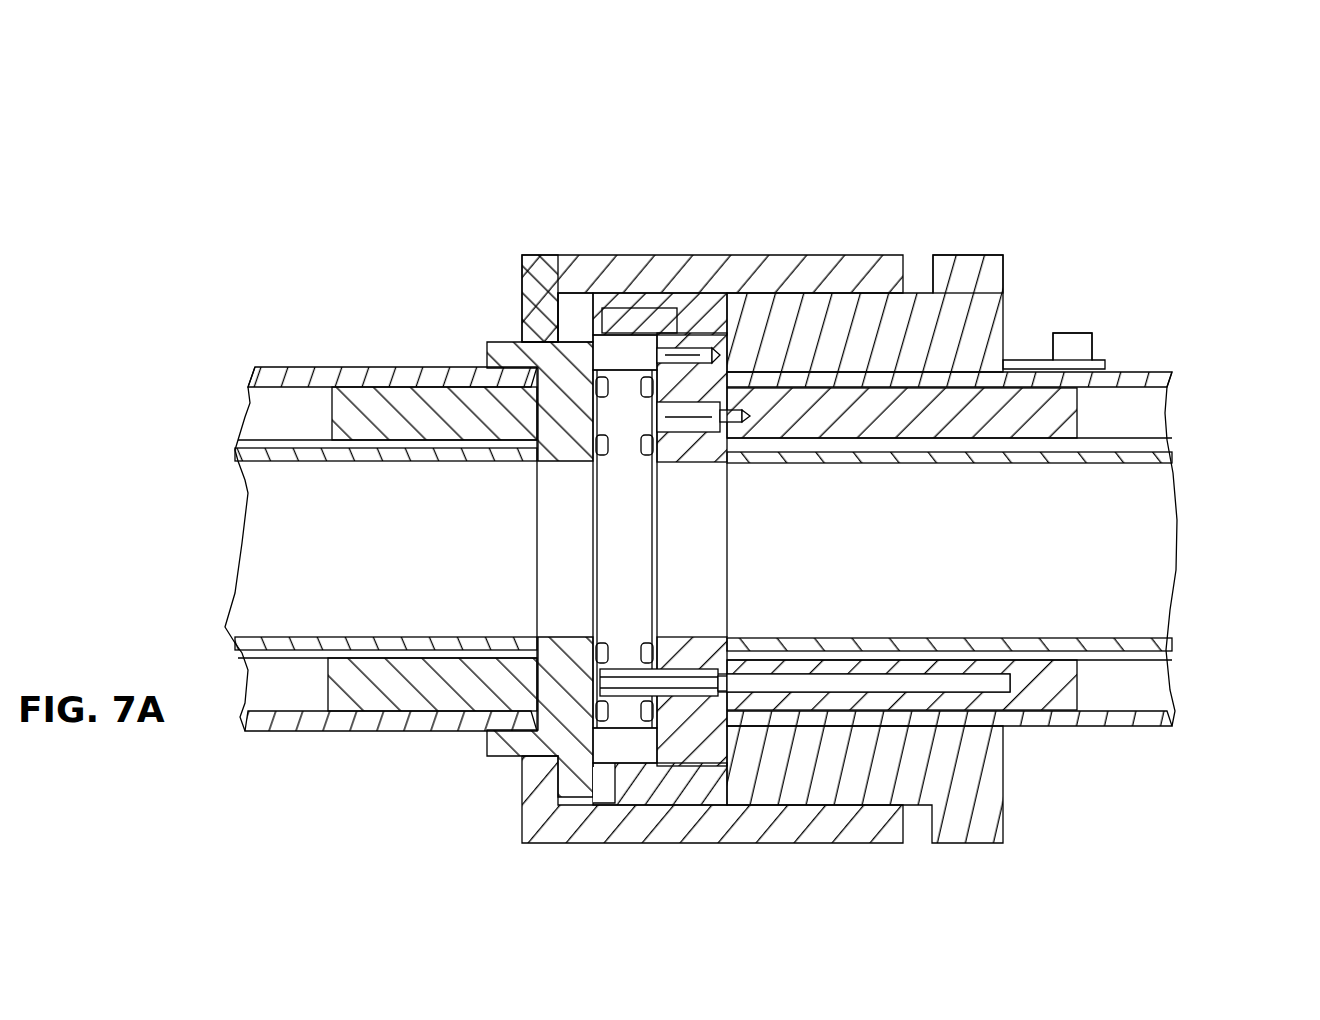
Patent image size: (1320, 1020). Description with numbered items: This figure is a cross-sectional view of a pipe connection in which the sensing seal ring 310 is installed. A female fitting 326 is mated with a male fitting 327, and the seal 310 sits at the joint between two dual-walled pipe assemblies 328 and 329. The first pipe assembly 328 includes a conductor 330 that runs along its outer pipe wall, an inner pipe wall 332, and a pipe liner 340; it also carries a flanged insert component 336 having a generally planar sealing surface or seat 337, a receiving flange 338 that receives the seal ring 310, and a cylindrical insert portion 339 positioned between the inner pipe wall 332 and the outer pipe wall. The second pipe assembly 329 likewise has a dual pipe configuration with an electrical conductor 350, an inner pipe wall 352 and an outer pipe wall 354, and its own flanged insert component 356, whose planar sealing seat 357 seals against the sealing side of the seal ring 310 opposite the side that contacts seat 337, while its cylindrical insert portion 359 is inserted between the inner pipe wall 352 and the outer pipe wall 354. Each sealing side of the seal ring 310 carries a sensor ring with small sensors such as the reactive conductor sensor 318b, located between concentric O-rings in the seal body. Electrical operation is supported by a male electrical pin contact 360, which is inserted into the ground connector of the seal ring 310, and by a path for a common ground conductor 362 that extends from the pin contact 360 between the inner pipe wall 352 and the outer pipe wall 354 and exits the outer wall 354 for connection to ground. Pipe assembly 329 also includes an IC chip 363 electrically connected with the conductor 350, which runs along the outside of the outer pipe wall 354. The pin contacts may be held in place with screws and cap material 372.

The seal ring 310 is at (620, 380).
The reactive conductor sensor 318b is at (247, 365).
The female fitting 326 is at (792, 255).
The male fitting 327 is at (880, 296).
The dual-walled pipe assembly 328 is at (430, 738).
The dual-walled pipe assembly 329 is at (1192, 398).
The conductor 330 is at (292, 362).
The inner pipe wall 332 is at (355, 445).
The flanged insert component 336 is at (492, 415).
The planar sealing surface/seat 337 is at (592, 365).
The receiving flange 338 is at (605, 745).
The cylindrical insert portion 339 is at (362, 690).
The pipe liner 340 is at (264, 453).
The electrical conductor 350 is at (1150, 378).
The inner pipe wall 352 is at (1161, 728).
The outer pipe wall 354 is at (1068, 332).
The flanged insert component 356 is at (960, 388).
The planar sealing surface/seat 357 is at (635, 695).
The cylindrical insert portion 359 is at (1008, 405).
The male electrical pin contact 360 is at (642, 705).
The common ground conductor 362 is at (1012, 680).
The IC chip 363 is at (1004, 405).
The screws and cap material 372 is at (690, 413).